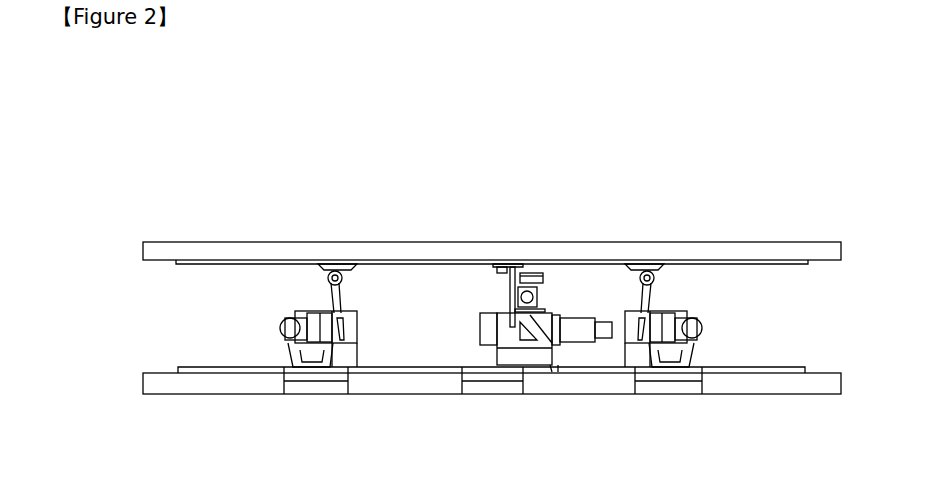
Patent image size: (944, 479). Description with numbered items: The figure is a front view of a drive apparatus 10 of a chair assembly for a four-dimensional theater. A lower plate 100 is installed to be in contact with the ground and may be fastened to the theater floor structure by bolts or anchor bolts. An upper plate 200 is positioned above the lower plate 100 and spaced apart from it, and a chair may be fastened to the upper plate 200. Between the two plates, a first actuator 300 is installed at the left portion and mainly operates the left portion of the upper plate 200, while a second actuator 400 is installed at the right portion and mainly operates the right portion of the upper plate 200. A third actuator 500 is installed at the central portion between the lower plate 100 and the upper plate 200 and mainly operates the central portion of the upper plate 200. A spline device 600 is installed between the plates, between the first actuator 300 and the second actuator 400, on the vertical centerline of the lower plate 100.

The drive apparatus 10 is at (224, 134).
The lower plate 100 is at (228, 385).
The upper plate 200 is at (242, 252).
The first actuator 300 is at (278, 331).
The second actuator 400 is at (706, 330).
The third actuator 500 is at (475, 318).
The spline device 600 is at (548, 280).